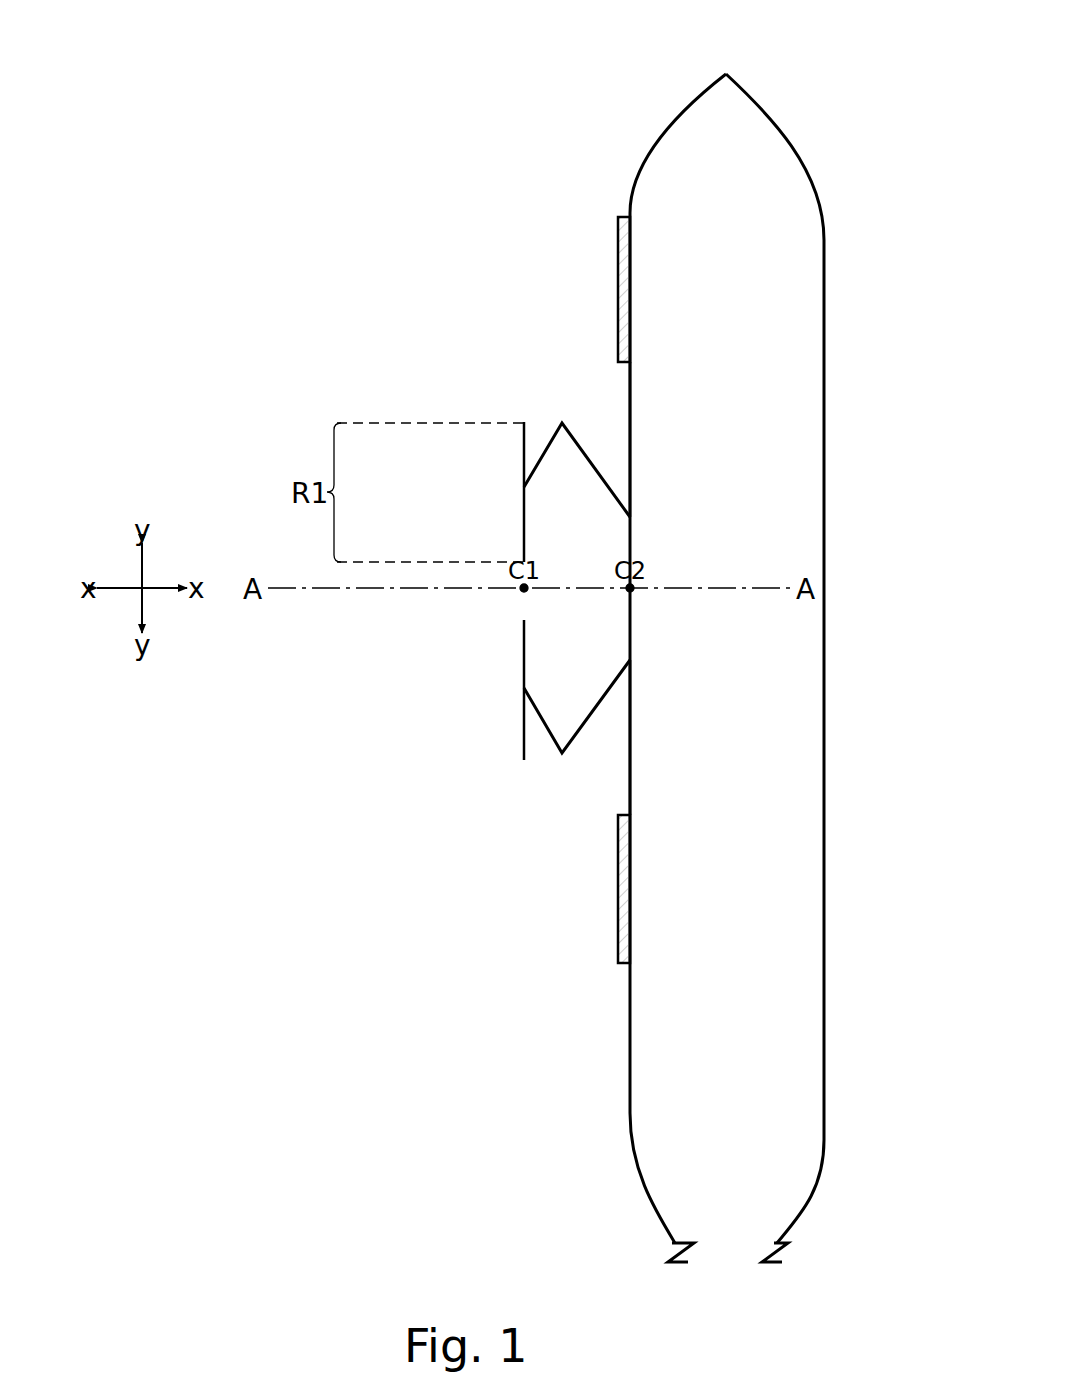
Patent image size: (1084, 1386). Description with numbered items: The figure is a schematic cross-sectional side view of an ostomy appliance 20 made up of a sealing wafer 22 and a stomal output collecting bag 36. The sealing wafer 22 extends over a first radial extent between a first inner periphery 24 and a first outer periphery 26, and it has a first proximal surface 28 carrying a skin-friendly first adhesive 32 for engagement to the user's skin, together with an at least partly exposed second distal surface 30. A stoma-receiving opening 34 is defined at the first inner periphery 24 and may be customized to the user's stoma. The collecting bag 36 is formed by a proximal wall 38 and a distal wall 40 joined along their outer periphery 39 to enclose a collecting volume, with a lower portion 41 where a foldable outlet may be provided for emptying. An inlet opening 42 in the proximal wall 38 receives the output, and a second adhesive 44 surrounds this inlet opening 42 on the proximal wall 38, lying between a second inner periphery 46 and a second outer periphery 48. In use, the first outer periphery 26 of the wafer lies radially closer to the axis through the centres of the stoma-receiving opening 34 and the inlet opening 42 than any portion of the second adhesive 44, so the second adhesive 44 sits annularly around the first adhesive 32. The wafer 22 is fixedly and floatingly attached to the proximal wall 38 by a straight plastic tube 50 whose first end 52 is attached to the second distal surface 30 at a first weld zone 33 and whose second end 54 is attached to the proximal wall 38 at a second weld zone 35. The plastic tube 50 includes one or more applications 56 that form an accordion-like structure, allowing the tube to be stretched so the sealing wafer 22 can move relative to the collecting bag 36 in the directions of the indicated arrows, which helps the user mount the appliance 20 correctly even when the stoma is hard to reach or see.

The ostomy appliance 20 is at (462, 147).
The sealing wafer 22 is at (428, 380).
The first inner periphery 24 is at (526, 560).
The first outer periphery 26 is at (524, 430).
The first proximal surface 28 is at (522, 445).
The second distal surface 30 is at (534, 424).
The first adhesive 32 is at (522, 487).
The first weld zone 33 is at (526, 487).
The stoma-receiving opening 34 is at (522, 612).
The second weld zone 35 is at (632, 515).
The stomal output collecting bag 36 is at (762, 631).
The proximal wall 38 is at (675, 130).
The outer periphery 39 is at (726, 74).
The distal wall 40 is at (808, 160).
The lower portion 41 is at (730, 1252).
The inlet opening 42 is at (636, 552).
The second adhesive 44 is at (581, 549).
The second inner periphery 46 is at (630, 365).
The second outer periphery 48 is at (622, 217).
The plastic tube 50 is at (590, 462).
The first end 52 is at (526, 688).
The second end 54 is at (631, 660).
The application 56 is at (560, 756).